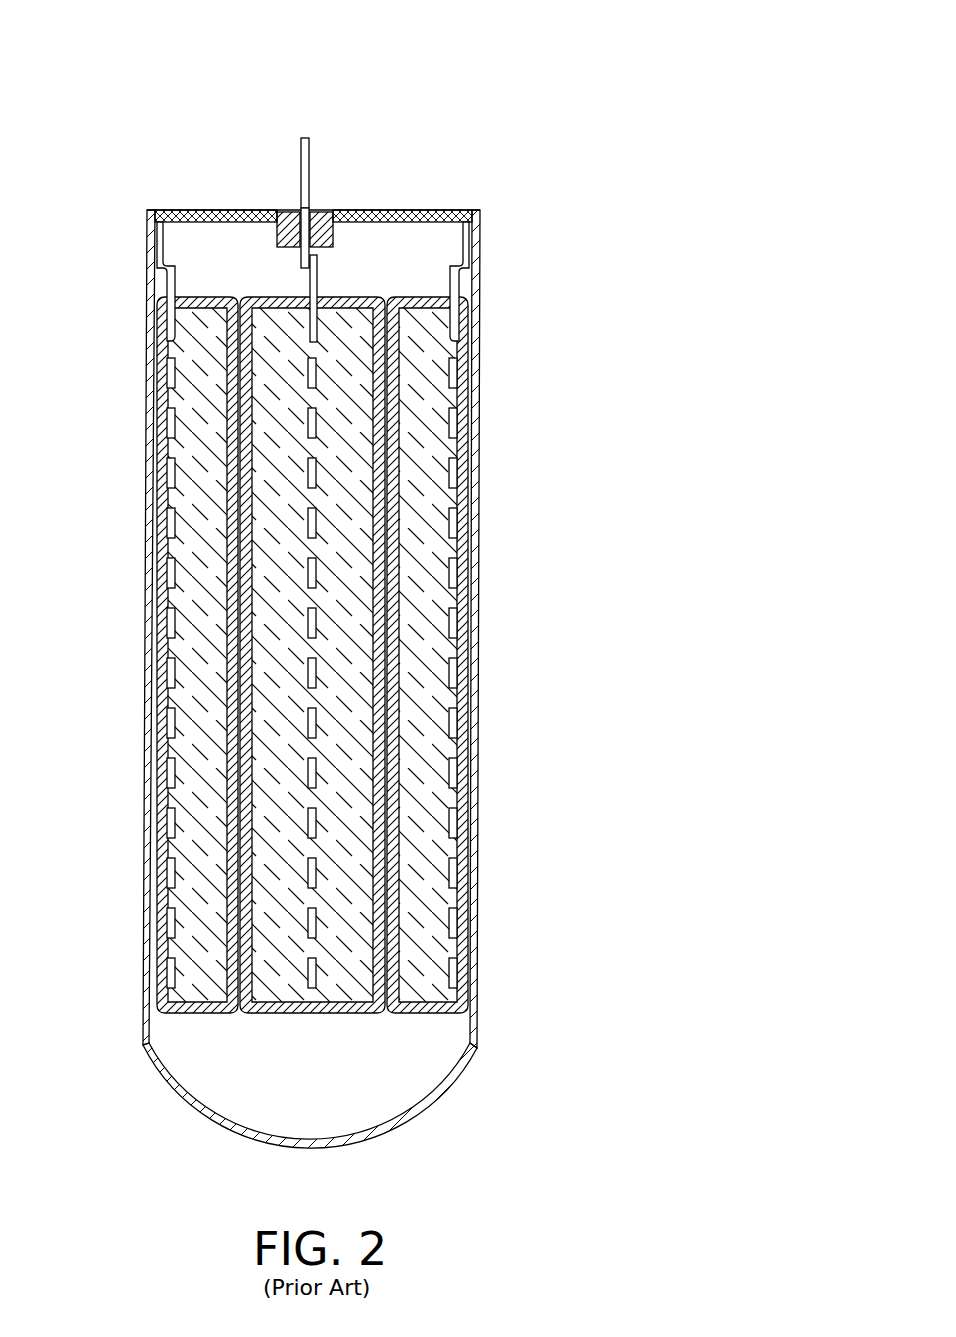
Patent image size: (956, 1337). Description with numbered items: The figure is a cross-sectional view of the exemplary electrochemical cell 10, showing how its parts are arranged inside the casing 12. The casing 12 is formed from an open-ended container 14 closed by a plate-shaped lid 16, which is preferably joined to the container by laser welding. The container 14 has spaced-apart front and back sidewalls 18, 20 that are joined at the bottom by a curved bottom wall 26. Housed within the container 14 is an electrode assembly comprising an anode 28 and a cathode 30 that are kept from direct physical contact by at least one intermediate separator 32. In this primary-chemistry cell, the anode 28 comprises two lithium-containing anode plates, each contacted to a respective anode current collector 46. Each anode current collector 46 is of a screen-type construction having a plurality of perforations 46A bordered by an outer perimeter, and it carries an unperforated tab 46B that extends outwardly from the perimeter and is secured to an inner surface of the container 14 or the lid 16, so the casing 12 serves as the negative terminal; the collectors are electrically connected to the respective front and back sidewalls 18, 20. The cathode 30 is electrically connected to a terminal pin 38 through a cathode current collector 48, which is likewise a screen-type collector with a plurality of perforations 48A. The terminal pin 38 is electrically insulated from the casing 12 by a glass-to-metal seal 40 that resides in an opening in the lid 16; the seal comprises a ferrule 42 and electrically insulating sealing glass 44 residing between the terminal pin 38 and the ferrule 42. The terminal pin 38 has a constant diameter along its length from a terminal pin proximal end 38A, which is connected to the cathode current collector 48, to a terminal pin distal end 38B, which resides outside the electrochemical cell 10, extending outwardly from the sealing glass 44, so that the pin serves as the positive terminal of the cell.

The electrochemical cell 10 is at (566, 44).
The casing 12 is at (550, 168).
The open-ended container 14 is at (494, 282).
The lid 16 is at (400, 210).
The front sidewall 18 is at (147, 887).
The back sidewall 20 is at (472, 900).
The curved bottom wall 26 is at (215, 1118).
The anode 28 is at (160, 550).
The cathode 30 is at (283, 447).
The separator 32 is at (388, 665).
The terminal pin 38 is at (310, 152).
The terminal pin proximal end 38A is at (302, 268).
The terminal pin distal end 38B is at (300, 139).
The glass-to-metal seal 40 is at (345, 172).
The ferrule 42 is at (277, 236).
The sealing glass 44 is at (297, 210).
The anode current collector 46 is at (160, 377).
The perforations 46A is at (160, 692).
The unperforated tab 46B is at (157, 243).
The cathode current collector 48 is at (320, 372).
The perforations 48A is at (315, 935).